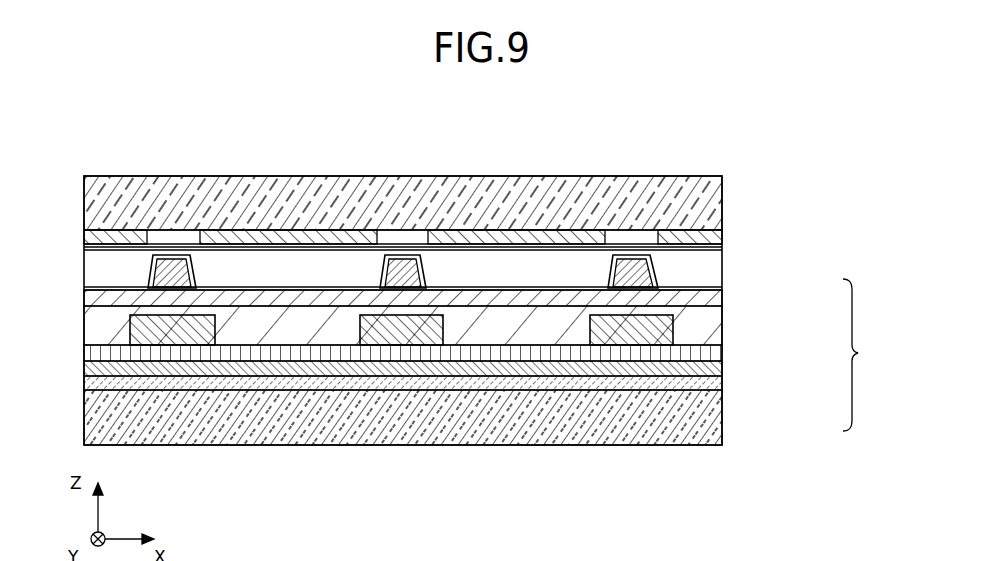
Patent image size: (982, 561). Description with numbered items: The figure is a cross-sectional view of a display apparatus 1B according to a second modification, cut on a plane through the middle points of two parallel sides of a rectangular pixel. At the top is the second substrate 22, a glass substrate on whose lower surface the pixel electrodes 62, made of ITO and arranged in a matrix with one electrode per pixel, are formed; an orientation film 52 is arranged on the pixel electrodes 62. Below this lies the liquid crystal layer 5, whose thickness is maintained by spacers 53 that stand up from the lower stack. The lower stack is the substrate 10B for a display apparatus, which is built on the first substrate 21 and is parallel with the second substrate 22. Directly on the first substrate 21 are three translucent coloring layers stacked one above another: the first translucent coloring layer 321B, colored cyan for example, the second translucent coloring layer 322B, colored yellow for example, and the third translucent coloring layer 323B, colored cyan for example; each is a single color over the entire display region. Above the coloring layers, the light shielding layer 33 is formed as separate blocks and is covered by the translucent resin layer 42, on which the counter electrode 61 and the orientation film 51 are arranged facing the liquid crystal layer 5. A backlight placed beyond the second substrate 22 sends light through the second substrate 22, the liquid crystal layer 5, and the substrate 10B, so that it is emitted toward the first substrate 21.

The display apparatus 1B is at (706, 150).
The second substrate 22 is at (722, 201).
The pixel electrode 62 is at (283, 235).
The orientation film 52 is at (722, 250).
The liquid crystal layer 5 is at (716, 271).
The spacer 53 is at (172, 258).
The orientation film 51 is at (722, 290).
The counter electrode 61 is at (722, 303).
The translucent resin layer 42 is at (717, 319).
The light shielding layer 33 is at (665, 335).
The third translucent coloring layer 323B is at (722, 354).
The second translucent coloring layer 322B is at (722, 371).
The first translucent coloring layer 321B is at (722, 387).
The first substrate 21 is at (722, 419).
The substrate for a display apparatus 10B is at (869, 355).